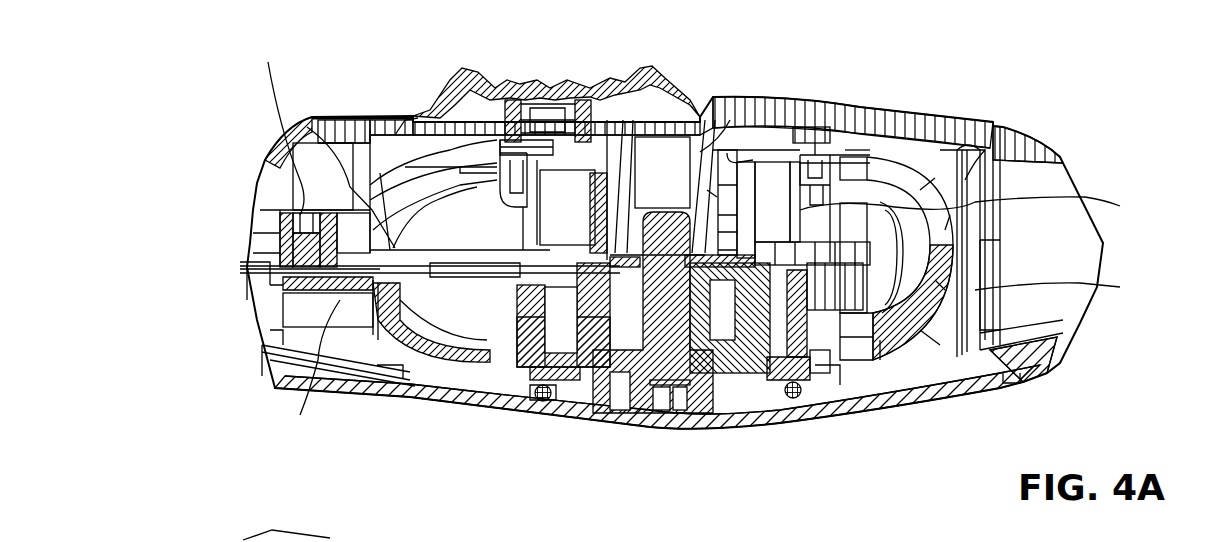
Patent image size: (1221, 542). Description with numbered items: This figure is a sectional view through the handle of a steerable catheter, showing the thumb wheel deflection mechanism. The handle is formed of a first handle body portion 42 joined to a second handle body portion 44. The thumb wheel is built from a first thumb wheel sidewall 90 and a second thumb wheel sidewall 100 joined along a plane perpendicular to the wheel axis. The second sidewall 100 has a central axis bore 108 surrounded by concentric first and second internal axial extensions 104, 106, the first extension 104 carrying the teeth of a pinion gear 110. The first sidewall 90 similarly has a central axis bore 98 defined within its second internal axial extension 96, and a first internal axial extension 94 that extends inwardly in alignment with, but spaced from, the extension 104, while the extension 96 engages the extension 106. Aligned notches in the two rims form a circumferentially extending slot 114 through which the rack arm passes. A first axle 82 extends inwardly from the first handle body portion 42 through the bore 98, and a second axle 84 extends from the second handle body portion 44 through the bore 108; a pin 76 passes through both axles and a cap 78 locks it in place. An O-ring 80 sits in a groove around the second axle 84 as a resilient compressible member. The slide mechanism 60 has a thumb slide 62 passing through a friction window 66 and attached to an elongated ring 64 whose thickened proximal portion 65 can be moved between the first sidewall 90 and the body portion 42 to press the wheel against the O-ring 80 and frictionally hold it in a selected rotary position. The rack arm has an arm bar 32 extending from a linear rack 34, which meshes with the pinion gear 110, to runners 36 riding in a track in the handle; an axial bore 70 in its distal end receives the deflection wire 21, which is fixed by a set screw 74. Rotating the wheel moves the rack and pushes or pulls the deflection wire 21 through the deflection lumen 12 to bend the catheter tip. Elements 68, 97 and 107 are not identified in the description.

The deflection lumen 12 is at (243, 270).
The deflection wire 21 is at (280, 270).
The arm bar 32 is at (478, 290).
The linear rack 34 is at (975, 210).
The runner 36 is at (262, 348).
The first handle body portion 42 is at (1065, 135).
The second handle body portion 44 is at (1065, 362).
The slide mechanism 60 is at (612, 48).
The thumb slide 62 is at (665, 172).
The elongated ring 64 is at (412, 122).
The proximal portion 65 is at (845, 150).
The friction window 66 is at (398, 118).
The support member 68 is at (738, 235).
The axially extending bore 70 is at (290, 285).
The set screw 74 is at (300, 205).
The pin 76 is at (625, 405).
The cap 78 is at (712, 412).
The O-ring 80 is at (535, 395).
The first axle 82 is at (712, 192).
The second axle 84 is at (770, 410).
The first thumb wheel sidewall 90 is at (890, 155).
The first internal axial extension 94 is at (985, 140).
The second internal axial extension 96 is at (805, 125).
The seal line 97 is at (1135, 188).
The central axis bore 98 is at (700, 152).
The second thumb wheel sidewall 100 is at (903, 352).
The first internal axial extension 104 is at (820, 370).
The second internal axial extension 106 is at (585, 405).
The seam 107 is at (300, 415).
The central axis bore 108 is at (682, 415).
The pinion gear 110 is at (775, 360).
The circumferentially extending slot 114 is at (372, 210).